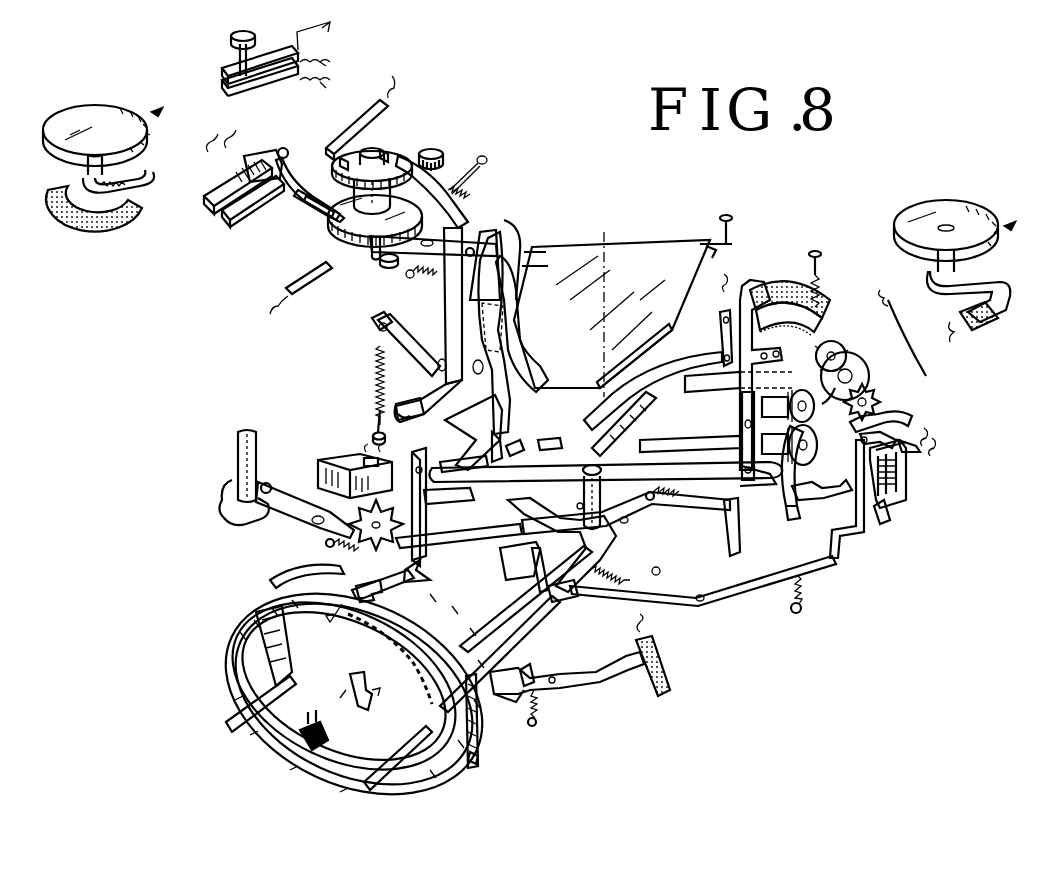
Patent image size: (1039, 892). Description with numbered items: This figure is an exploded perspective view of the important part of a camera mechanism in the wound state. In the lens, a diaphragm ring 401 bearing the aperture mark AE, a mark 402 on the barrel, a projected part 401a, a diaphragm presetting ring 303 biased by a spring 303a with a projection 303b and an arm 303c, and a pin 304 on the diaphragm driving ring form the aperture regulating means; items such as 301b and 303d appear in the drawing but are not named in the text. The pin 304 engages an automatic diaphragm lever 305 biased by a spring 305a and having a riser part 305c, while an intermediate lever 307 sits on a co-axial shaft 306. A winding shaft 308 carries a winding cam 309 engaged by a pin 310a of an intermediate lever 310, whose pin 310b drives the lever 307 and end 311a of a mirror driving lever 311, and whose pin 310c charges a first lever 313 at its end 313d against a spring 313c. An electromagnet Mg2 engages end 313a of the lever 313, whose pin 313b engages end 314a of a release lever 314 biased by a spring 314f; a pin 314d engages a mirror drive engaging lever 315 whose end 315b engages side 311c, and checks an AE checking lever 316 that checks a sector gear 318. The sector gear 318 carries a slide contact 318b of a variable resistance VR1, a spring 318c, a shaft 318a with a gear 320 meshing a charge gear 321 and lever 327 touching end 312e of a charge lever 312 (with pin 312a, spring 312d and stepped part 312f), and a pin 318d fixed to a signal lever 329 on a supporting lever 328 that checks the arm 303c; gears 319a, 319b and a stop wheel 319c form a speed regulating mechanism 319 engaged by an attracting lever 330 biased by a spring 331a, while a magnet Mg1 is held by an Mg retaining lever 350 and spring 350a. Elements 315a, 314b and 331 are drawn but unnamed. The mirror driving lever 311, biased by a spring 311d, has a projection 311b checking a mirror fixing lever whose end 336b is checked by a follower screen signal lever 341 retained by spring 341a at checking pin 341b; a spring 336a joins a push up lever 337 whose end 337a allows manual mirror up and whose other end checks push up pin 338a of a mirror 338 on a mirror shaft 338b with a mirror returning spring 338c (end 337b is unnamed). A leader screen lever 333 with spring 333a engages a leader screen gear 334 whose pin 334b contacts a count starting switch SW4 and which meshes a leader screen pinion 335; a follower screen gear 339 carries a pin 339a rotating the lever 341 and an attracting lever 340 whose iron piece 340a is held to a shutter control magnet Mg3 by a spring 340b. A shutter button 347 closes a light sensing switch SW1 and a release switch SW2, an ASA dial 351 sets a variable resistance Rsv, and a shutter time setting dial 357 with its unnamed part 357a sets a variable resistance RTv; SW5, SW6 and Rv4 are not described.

The shutter time setting dial 357 is at (62, 112).
The dial lever 357a is at (150, 180).
The variable resistance for shutter time RTv is at (85, 215).
The shutter button 347 is at (230, 44).
The light sensing switch SW1 is at (287, 53).
The release switch SW2 is at (287, 79).
The shutter control magnet Mg3 is at (237, 212).
The iron piece 340a is at (262, 156).
The spring 340b is at (312, 200).
The pin 339a is at (322, 214).
The attracting lever 340 is at (330, 230).
The switch SW5 is at (290, 286).
The leader screen gear 334 is at (400, 152).
The pin 334b is at (372, 148).
The count starting switch SW4 is at (386, 96).
The leader screen pinion 335 is at (437, 150).
The follower screen signal lever 341 is at (433, 206).
The spring 333a is at (486, 160).
The leader screen lever 333 is at (456, 196).
The checking pin 341b is at (486, 232).
The end of mirror fixing lever 336b is at (506, 232).
The follower screen gear 339 is at (375, 258).
The spring 341a is at (428, 274).
The mirror driving lever 311 is at (420, 350).
The projection 311b is at (440, 308).
The spring 311d is at (374, 368).
The end of mirror driving lever 311a is at (380, 408).
The end of first lever 313a is at (374, 436).
The end of push up lever 337a is at (402, 404).
The push up lever 337 is at (490, 392).
The side of mirror driving lever 311c is at (480, 410).
The lever end 337b is at (496, 440).
The end of mirror drive engaging lever 315b is at (548, 440).
The riser part 305c is at (508, 450).
The mirror 338 is at (668, 318).
The push up pin 338a is at (538, 268).
The spring 336a is at (520, 318).
The mirror shaft 338b is at (718, 258).
The mirror returning spring 338c is at (732, 240).
The variable resistance VR1 is at (786, 284).
The sector gear 318 is at (742, 400).
The slide contact 318b is at (742, 300).
The spring 318c is at (822, 276).
The supporting lever 328 is at (718, 336).
The signal lever 329 is at (660, 386).
The arm 303c is at (640, 410).
The pin 318d is at (700, 392).
The pin 312a is at (650, 446).
The AE checking lever 316 is at (740, 444).
The gear 320 is at (801, 406).
The charge gear 321 is at (810, 452).
The charge lever 312 is at (780, 502).
The shaft 318a is at (772, 486).
The end of charge lever 312e is at (822, 500).
The lever 327 is at (796, 522).
The gear 319a is at (842, 348).
The gear 319b is at (858, 370).
The stop wheel 319c is at (874, 394).
The speed regulating mechanism 319 is at (912, 328).
The attracting lever 330 is at (896, 414).
The spring 331a is at (898, 436).
The armature 331 is at (924, 448).
The magnet Mg1 is at (892, 512).
The stepped part 312f is at (848, 530).
The Mg retaining lever 350 is at (752, 594).
The spring 350a is at (806, 586).
The ASA dial 351 is at (930, 206).
The variable resistance for film sensitivity Rsv is at (988, 322).
The intermediate lever 307 is at (582, 464).
The co-axial shaft 306 is at (602, 507).
The automatic diaphragm lever 305 is at (576, 590).
The spring 305a is at (662, 570).
The release lever 314 is at (660, 526).
The pin 314d is at (725, 529).
The spring 312d is at (676, 493).
The winding shaft 308 is at (258, 450).
The winding cam 309 is at (238, 526).
The intermediate lever 310 is at (290, 520).
The pin 310a is at (272, 488).
The electromagnet Mg2 is at (330, 460).
The first lever 313 is at (376, 532).
The end of first lever 313d is at (320, 540).
The pin 310c is at (280, 578).
The pin 313b is at (415, 569).
The projection 303b is at (410, 582).
The mirror drive engaging lever 315 is at (426, 512).
The arm 315a is at (462, 520).
The pin 310b is at (446, 466).
The end of release lever 314a is at (436, 546).
The spring 314f is at (510, 556).
The arm 314b is at (536, 580).
The projected part 401a is at (454, 632).
The pin 304 is at (524, 624).
The aperture ring 301b is at (354, 693).
The arm 303d is at (240, 740).
The mark 402 is at (339, 615).
The spring 313c is at (344, 626).
The switch SW6 is at (370, 700).
The diaphragm ring 401 is at (470, 768).
The spring 303a is at (480, 760).
The diaphragm presetting ring 303 is at (567, 690).
The resistor Rv4 is at (660, 698).